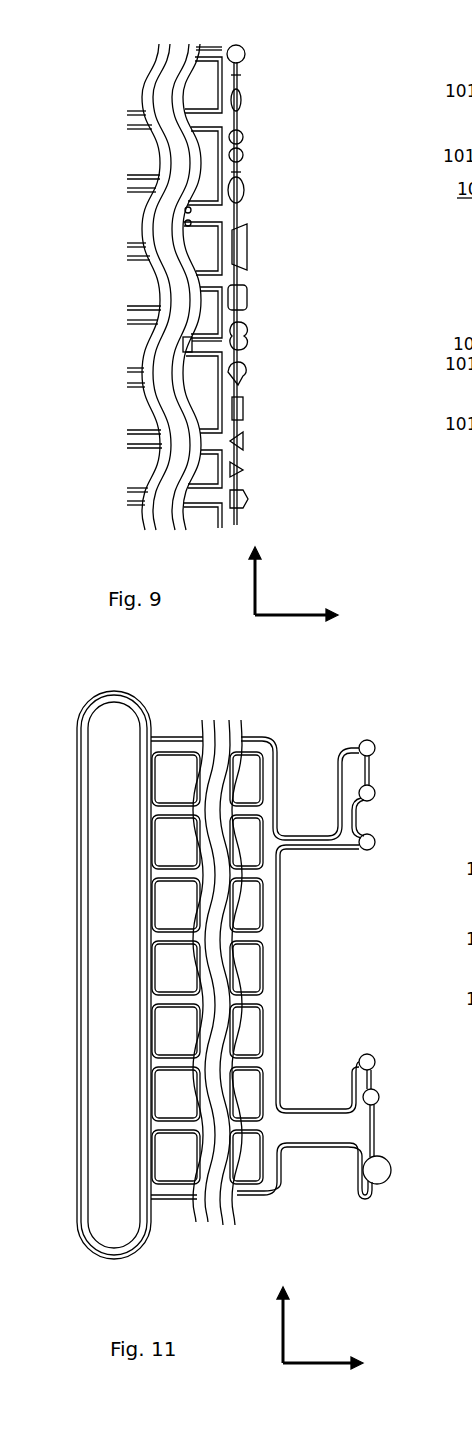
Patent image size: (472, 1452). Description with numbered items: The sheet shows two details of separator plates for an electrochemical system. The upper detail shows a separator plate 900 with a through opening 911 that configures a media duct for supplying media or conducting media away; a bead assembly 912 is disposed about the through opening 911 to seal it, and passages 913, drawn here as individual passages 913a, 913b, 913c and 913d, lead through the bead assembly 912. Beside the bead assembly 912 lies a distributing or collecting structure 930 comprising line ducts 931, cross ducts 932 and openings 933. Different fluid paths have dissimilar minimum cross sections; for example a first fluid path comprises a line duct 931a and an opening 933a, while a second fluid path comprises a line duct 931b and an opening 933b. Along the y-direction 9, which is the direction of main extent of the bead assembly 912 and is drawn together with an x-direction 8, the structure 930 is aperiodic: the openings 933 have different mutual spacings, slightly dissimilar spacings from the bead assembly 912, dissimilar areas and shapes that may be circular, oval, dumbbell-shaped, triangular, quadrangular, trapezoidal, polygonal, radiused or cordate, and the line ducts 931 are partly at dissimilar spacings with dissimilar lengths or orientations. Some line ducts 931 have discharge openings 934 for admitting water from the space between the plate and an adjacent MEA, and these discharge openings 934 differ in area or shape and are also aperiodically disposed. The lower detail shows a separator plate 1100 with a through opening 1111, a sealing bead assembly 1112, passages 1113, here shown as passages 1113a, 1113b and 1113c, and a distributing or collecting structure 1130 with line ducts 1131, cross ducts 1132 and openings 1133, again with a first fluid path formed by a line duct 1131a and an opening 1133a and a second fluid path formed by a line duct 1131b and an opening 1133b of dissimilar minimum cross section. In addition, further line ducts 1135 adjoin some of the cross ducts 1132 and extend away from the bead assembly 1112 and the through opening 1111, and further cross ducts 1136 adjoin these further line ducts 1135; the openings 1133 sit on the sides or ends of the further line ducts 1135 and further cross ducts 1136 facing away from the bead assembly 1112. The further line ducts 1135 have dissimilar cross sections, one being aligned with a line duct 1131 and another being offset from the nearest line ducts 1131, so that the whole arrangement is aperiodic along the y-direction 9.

In FIG. 9, the separator plate 900 is at (300, 27).
In FIG. 9, the through opening 911 is at (77, 333).
In FIG. 9, the bead assembly 912 is at (176, 512).
In FIG. 9, the passages 913 is at (184, 222).
In FIG. 9, the first fin 913a is at (186, 66).
In FIG. 9, the second fin 913b is at (180, 486).
In FIG. 9, the third fin 913c is at (186, 130).
In FIG. 9, the fourth fin 913d is at (184, 430).
In FIG. 9, the distributing or collecting structure 930 is at (302, 522).
In FIG. 9, the line ducts 931 is at (241, 100).
In FIG. 9, the line duct 931a is at (192, 221).
In FIG. 9, the line duct 931b is at (239, 320).
In FIG. 9, the cross ducts 932 is at (241, 75).
In FIG. 9, the openings 933 is at (240, 133).
In FIG. 9, the opening 933a is at (242, 190).
In FIG. 9, the opening 933b is at (246, 348).
In FIG. 9, the discharge openings 934 is at (241, 172).
In FIG. 9, the x direction 8 is at (290, 612).
In FIG. 11, the x direction 8 is at (315, 1362).
In FIG. 9, the y-direction 9 is at (255, 590).
In FIG. 11, the y-direction 9 is at (283, 1337).
In FIG. 11, the separator plate 1100 is at (263, 710).
In FIG. 11, the through opening 1111 is at (131, 888).
In FIG. 11, the bead assembly 1112 is at (218, 1193).
In FIG. 11, the passages 1113 is at (236, 1011).
In FIG. 11, the first fin 1113a is at (236, 762).
In FIG. 11, the second fin 1113b is at (232, 1181).
In FIG. 11, the third fin 1113c is at (233, 823).
In FIG. 11, the distributing or collecting structure 1130 is at (311, 1214).
In FIG. 11, the line ducts 1131 is at (247, 886).
In FIG. 11, the line duct 1131a is at (243, 1131).
In FIG. 11, the line duct 1131b is at (245, 777).
In FIG. 11, the cross ducts 1132 is at (283, 849).
In FIG. 11, the openings 1133 is at (372, 745).
In FIG. 11, the opening 1133a is at (390, 1173).
In FIG. 11, the opening 1133b is at (373, 842).
In FIG. 11, the further line ducts 1135 is at (305, 835).
In FIG. 11, the further cross ducts 1136 is at (354, 816).